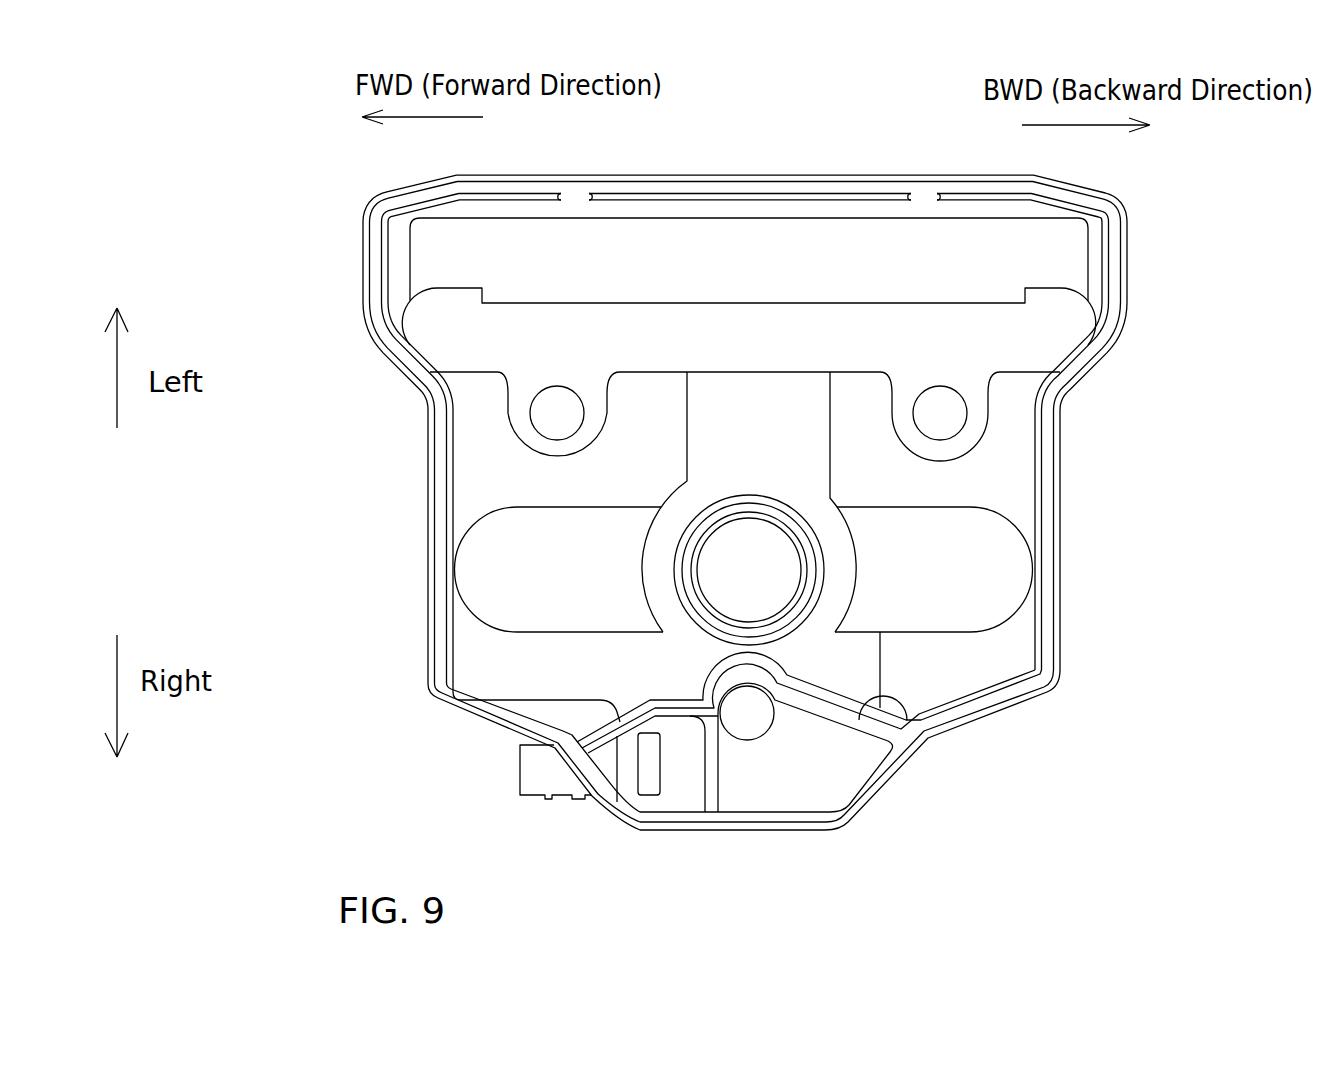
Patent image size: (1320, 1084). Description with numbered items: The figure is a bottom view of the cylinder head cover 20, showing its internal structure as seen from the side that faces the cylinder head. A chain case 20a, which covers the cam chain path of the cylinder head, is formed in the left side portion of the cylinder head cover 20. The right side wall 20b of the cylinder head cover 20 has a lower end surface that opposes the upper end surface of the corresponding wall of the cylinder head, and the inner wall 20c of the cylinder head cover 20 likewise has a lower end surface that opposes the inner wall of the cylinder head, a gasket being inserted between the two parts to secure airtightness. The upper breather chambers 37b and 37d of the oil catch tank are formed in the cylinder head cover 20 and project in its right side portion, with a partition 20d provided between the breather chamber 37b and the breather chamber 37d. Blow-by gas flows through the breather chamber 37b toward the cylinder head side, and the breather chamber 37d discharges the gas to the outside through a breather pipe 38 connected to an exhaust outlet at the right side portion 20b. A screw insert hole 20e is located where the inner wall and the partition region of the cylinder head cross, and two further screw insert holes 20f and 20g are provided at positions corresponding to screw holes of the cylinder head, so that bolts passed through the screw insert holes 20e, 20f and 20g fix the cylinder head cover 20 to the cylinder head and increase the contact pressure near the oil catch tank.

The cylinder head cover 20 is at (930, 152).
The chain case 20a is at (678, 200).
The right side wall 20b is at (838, 826).
The inner wall 20c is at (937, 740).
The partition 20d is at (710, 790).
The screw insert hole 20e is at (770, 721).
The screw insert hole 20f is at (541, 405).
The screw insert hole 20g is at (960, 410).
The breather chamber 37b is at (812, 796).
The breather chamber 37d is at (680, 794).
The breather pipe 38 is at (558, 797).